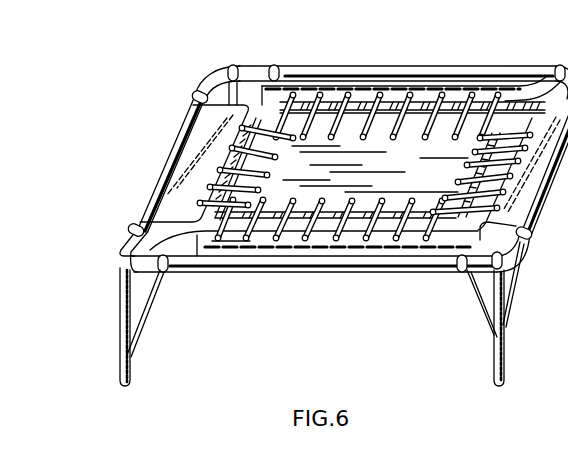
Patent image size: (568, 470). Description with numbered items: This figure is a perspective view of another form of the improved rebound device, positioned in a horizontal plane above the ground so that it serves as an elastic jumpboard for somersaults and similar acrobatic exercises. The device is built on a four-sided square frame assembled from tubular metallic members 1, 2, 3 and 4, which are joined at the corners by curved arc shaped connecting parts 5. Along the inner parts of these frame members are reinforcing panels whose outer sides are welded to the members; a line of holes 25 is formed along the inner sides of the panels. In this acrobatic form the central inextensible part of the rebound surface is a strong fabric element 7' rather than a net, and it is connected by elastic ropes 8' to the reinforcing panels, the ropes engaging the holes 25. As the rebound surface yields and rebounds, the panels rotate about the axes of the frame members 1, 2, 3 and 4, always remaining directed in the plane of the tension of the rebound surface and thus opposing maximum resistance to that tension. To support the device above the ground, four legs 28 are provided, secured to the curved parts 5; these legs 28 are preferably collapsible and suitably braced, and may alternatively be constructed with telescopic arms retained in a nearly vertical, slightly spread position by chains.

The tubular metallic member 1 is at (162, 183).
The tubular metallic member 2 is at (381, 67).
The tubular metallic member 3 is at (545, 166).
The tubular metallic member 4 is at (330, 273).
The curved arc shaped connecting part 5 is at (252, 67).
The strong fabric element 7' is at (375, 169).
The elastic rope 8' is at (365, 139).
The line of holes 25 is at (246, 243).
The leg 28 is at (129, 372).